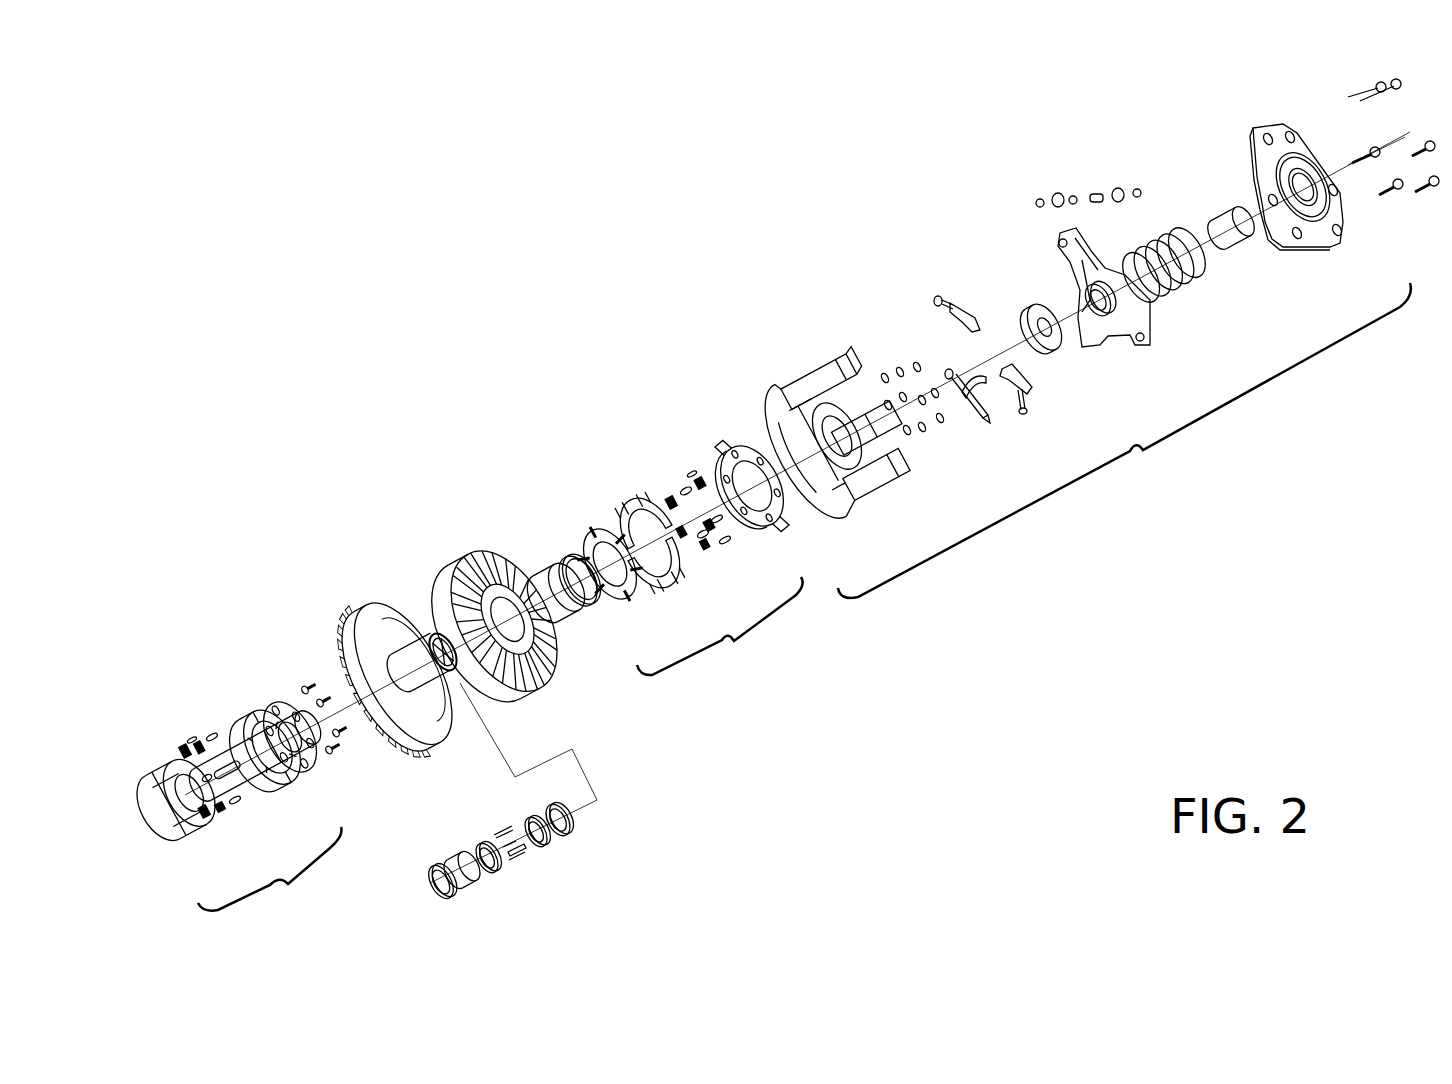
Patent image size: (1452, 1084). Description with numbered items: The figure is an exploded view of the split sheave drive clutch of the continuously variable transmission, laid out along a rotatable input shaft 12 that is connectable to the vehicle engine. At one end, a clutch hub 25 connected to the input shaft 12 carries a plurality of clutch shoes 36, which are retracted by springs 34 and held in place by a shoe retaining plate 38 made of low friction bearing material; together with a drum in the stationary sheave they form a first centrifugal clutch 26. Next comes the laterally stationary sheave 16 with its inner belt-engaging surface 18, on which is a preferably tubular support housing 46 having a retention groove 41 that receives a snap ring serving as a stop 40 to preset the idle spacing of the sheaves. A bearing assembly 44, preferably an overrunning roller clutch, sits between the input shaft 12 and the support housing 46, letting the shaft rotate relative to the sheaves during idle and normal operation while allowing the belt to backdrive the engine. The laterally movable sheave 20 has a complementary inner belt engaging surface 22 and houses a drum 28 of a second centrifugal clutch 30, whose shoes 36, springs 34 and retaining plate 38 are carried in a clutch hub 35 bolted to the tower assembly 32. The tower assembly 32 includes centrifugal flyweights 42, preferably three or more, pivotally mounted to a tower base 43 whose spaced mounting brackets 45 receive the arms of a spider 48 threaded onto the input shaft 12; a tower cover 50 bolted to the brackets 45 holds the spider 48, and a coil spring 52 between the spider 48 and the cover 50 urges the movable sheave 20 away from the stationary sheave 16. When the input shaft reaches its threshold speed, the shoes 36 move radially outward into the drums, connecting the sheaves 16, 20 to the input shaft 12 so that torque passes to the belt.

The input shaft 12 is at (192, 795).
The stationary sheave 16 is at (360, 602).
The inner belt-engaging surface 18 is at (425, 727).
The movable sheave 20 is at (514, 638).
The inner belt engaging surface 22 is at (507, 693).
The clutch hub 25 is at (157, 800).
The first centrifugal clutch 26 is at (270, 873).
The drum 28 is at (497, 592).
The second centrifugal clutch 30 is at (720, 626).
The tower assembly 32 is at (1124, 440).
The springs 34 is at (182, 753).
The clutch hub 35 is at (733, 447).
The clutch shoes 36 is at (243, 717).
The shoe retaining plate 38 is at (270, 702).
The stop 40 is at (574, 556).
The retention groove 41 is at (440, 637).
The centrifugal flyweights 42 is at (947, 293).
The tower base 43 is at (840, 418).
The bearing assembly 44 is at (518, 866).
The mounting brackets 45 is at (853, 370).
The support housing 46 is at (413, 658).
The spider 48 is at (1121, 335).
The tower cover 50 is at (1280, 133).
The coil spring 52 is at (1187, 267).